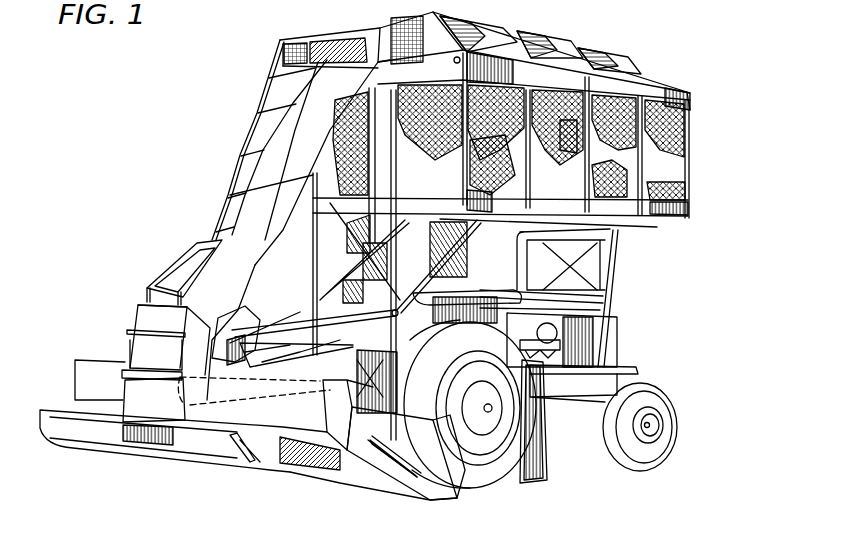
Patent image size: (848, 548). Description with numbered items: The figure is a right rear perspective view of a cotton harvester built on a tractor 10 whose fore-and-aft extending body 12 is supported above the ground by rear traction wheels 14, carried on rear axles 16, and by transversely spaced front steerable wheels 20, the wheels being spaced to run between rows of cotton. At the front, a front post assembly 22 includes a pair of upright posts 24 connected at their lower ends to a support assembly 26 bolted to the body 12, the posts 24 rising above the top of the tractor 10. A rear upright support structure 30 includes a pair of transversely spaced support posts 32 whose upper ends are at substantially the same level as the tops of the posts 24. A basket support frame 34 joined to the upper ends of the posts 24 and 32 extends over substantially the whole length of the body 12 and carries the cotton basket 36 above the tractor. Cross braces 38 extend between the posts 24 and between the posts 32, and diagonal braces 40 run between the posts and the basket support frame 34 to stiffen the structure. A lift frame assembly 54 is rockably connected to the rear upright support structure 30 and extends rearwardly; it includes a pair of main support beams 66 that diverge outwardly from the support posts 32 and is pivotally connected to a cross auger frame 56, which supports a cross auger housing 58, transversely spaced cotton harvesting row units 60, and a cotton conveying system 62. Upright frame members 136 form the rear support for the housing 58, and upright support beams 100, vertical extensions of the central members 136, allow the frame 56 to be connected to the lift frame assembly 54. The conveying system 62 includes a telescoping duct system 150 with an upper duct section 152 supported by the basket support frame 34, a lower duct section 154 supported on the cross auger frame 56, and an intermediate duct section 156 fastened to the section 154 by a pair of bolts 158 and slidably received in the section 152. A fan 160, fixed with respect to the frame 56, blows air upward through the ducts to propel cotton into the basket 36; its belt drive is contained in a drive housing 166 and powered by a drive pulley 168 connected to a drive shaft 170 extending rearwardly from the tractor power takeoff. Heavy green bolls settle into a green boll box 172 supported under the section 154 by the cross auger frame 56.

The tractor 10 is at (610, 333).
The body 12 is at (557, 383).
The rear traction wheels 14 is at (305, 313).
The rear axles 16 is at (500, 477).
The front steerable wheels 20 is at (680, 417).
The front post assembly 22 is at (618, 268).
The upright posts 24 is at (617, 250).
The support assembly 26 is at (627, 368).
The rear upright support structure 30 is at (196, 243).
The support posts 32 is at (314, 273).
The basket support frame 34 is at (657, 226).
The cotton basket 36 is at (676, 68).
The cross braces 38 is at (283, 228).
The diagonal braces 40 is at (502, 228).
The lift frame assembly 54 is at (264, 297).
The cross auger frame 56 is at (310, 494).
The cross auger housing 58 is at (375, 468).
The cotton harvesting row units 60 is at (440, 465).
The cotton conveying system 62 is at (128, 310).
The main support beams 66 is at (292, 372).
The upright support beams 100 is at (230, 433).
The upright frame members 136 is at (300, 470).
The telescoping duct system 150 is at (226, 127).
The upper duct section 152 is at (268, 135).
The lower duct section 154 is at (150, 349).
The intermediate duct section 156 is at (227, 219).
The bolts 158 is at (290, 264).
The fan 160 is at (283, 357).
The drive housing 166 is at (127, 363).
The drive pulley 168 is at (168, 410).
The drive shaft 170 is at (237, 428).
The green boll box 172 is at (113, 430).